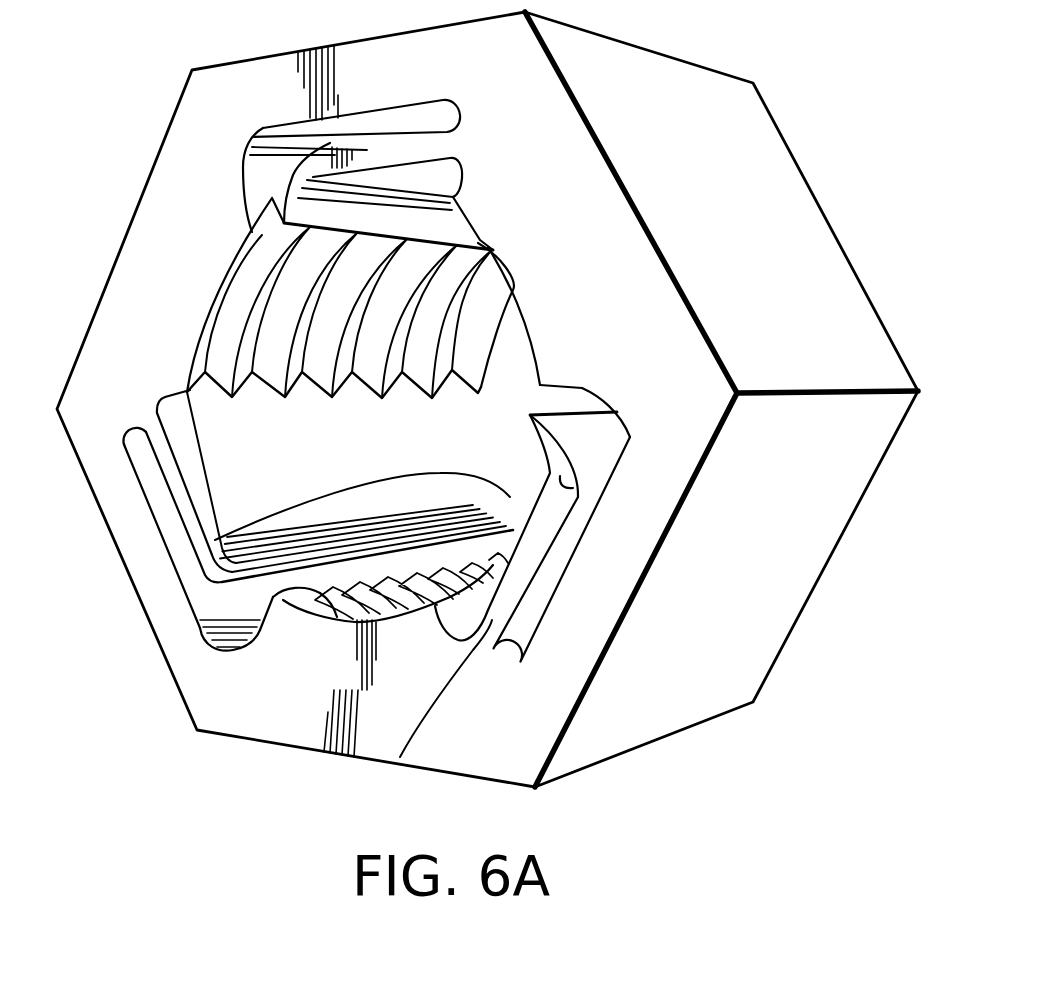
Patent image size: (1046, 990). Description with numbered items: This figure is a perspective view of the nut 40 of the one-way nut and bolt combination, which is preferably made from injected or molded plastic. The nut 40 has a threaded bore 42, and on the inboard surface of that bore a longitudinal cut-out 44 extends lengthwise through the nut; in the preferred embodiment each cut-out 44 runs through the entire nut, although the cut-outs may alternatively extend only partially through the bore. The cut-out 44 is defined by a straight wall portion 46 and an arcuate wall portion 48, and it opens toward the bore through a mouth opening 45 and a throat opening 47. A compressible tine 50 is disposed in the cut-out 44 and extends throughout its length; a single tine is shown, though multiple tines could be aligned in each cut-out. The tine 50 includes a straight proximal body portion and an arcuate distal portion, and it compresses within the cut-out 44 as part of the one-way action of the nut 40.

The nut 40 is at (487, 399).
The bore 42 is at (258, 634).
The longitudinal cut-out 44 is at (215, 535).
The mouth opening 45 is at (557, 402).
The straight wall portion 46 is at (450, 633).
The throat opening 47 is at (593, 448).
The arcuate wall portion 48 is at (578, 492).
The compressible tine 50 is at (342, 755).